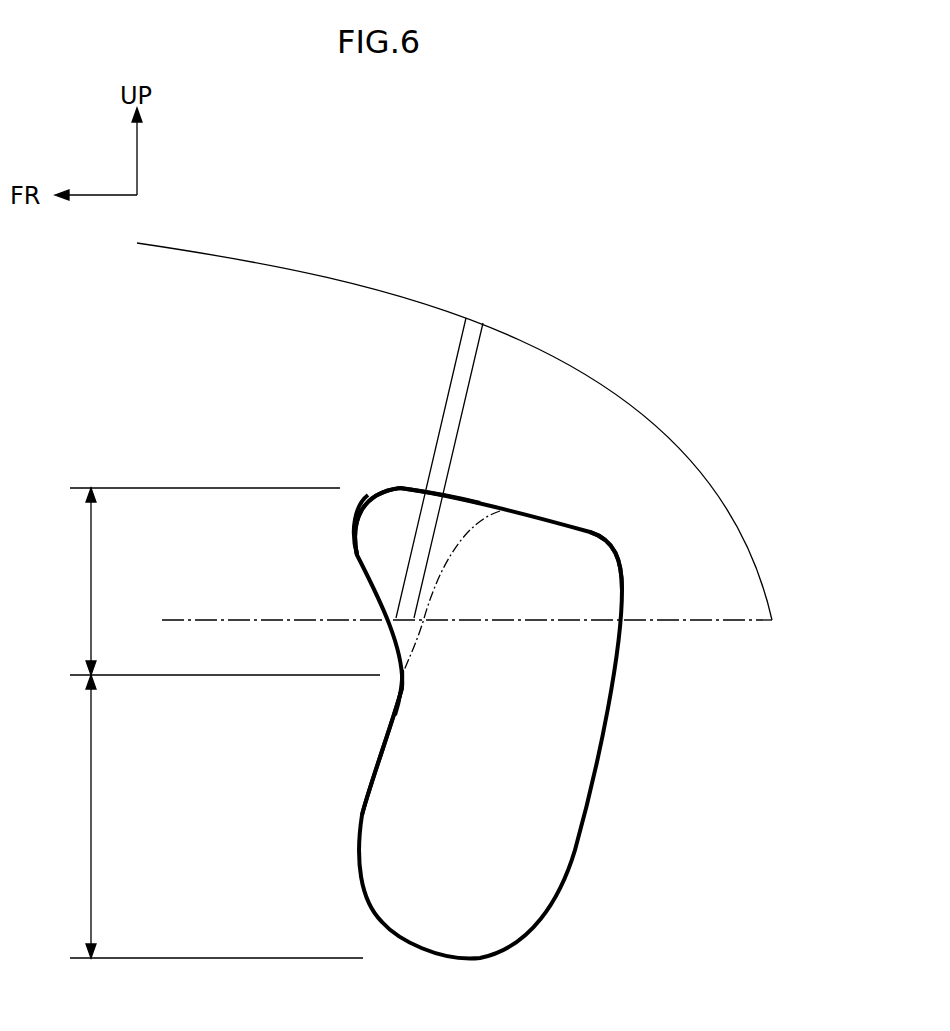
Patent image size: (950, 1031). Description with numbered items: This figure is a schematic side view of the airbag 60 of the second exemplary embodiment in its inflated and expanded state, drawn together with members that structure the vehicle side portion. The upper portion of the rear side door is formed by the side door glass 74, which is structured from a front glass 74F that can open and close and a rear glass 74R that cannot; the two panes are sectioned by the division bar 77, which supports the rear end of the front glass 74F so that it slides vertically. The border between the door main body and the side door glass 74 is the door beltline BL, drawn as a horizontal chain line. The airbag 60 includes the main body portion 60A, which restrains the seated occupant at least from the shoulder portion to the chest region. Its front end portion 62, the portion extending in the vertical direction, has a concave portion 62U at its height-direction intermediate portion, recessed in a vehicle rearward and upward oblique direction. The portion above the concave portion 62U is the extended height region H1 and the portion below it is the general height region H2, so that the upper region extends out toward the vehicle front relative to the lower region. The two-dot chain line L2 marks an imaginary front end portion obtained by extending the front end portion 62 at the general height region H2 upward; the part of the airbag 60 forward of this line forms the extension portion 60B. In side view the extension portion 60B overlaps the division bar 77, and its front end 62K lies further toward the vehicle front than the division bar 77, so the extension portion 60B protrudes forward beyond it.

The airbag 60 is at (592, 783).
The main body portion 60A is at (603, 582).
The extension portion 60B is at (398, 508).
The front end portion 62 is at (375, 763).
The front end 62K is at (353, 523).
The concave portion 62U is at (400, 677).
The side door glass 74 is at (454, 431).
The front glass 74F is at (307, 383).
The rear glass 74R is at (624, 444).
The division bar 77 is at (460, 383).
The two-dot chain line L2 is at (473, 527).
The door beltline BL is at (182, 618).
The extended height region H1 is at (212, 581).
The general height region H2 is at (204, 816).